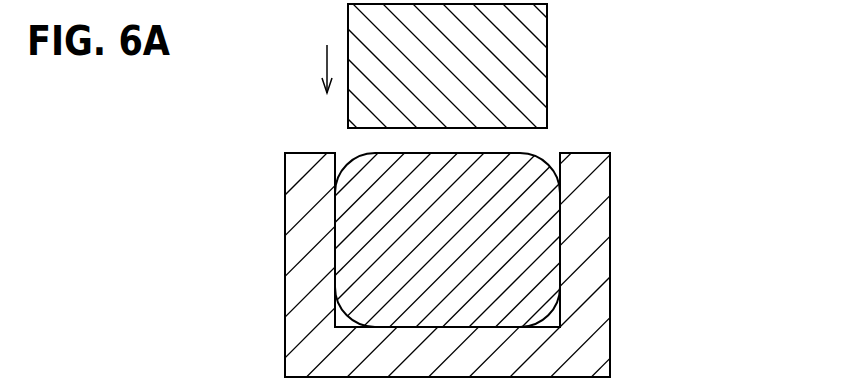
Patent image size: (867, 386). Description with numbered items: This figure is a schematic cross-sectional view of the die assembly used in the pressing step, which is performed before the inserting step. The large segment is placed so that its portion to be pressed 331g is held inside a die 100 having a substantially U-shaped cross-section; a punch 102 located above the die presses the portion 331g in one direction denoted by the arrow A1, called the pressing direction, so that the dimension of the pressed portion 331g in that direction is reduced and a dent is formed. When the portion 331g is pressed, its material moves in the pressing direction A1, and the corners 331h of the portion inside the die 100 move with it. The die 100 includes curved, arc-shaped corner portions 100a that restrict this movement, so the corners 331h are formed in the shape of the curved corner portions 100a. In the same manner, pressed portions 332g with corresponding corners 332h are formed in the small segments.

The die 100 is at (597, 230).
The curved corner portions 100a is at (340, 323).
The punch 102 is at (537, 25).
The portion to be pressed 331g is at (455, 202).
The pressed portions 332g is at (527, 172).
The corners 331h is at (455, 304).
The corners 332h is at (347, 320).
The arrow A1 is at (327, 65).